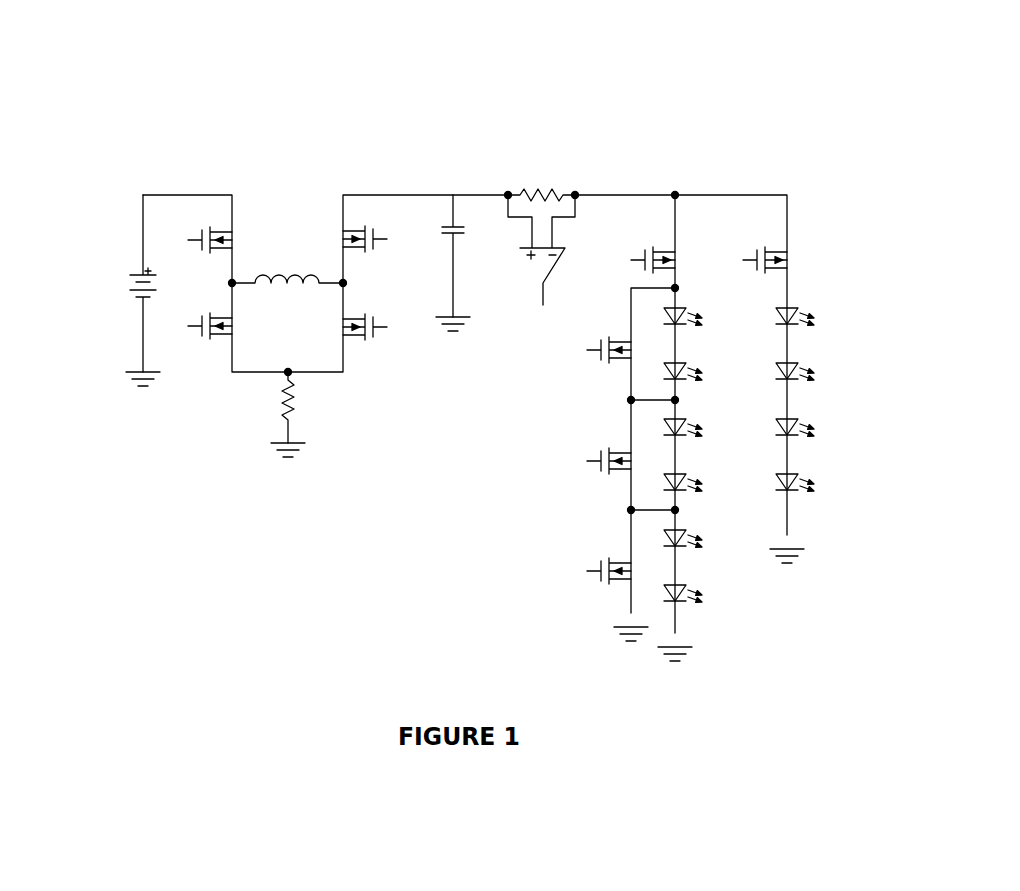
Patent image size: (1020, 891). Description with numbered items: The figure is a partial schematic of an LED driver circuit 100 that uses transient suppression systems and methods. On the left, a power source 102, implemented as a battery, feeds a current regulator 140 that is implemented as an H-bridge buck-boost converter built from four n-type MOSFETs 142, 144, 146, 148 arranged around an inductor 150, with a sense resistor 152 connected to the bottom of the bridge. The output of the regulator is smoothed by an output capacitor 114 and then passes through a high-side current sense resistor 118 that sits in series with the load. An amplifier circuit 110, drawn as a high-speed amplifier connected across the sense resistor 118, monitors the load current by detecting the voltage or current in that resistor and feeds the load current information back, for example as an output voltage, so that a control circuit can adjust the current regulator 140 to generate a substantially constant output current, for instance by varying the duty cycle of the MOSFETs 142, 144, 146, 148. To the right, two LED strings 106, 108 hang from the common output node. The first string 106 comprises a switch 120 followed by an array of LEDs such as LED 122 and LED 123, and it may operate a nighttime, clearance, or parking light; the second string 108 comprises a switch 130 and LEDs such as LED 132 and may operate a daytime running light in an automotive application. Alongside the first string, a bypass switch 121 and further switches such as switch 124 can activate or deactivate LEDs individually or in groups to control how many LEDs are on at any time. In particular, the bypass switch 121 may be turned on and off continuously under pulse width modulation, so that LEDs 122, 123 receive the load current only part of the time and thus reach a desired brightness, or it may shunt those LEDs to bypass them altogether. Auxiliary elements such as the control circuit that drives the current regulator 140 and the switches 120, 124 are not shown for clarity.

The LED driver circuit 100 is at (475, 46).
The power source 102 is at (118, 281).
The LED string 106 is at (692, 152).
The LED string 108 is at (757, 152).
The amplifier circuit 110 is at (530, 275).
The output capacitor 114 is at (448, 243).
The high-side current sense resistor 118 is at (541, 165).
The switch 120 is at (632, 263).
The bypass switch 121 is at (593, 358).
The LED 122 is at (710, 328).
The LED 123 is at (710, 386).
The switch 124 is at (590, 454).
The switch 130 is at (750, 252).
The LED 132 is at (826, 322).
The current regulator 140 is at (284, 148).
The n-type MOSFET 142 is at (202, 258).
The n-type MOSFET 144 is at (202, 345).
The n-type MOSFET 146 is at (368, 345).
The n-type MOSFET 148 is at (368, 258).
The inductor 150 is at (283, 268).
The sense resistor 152 is at (280, 413).